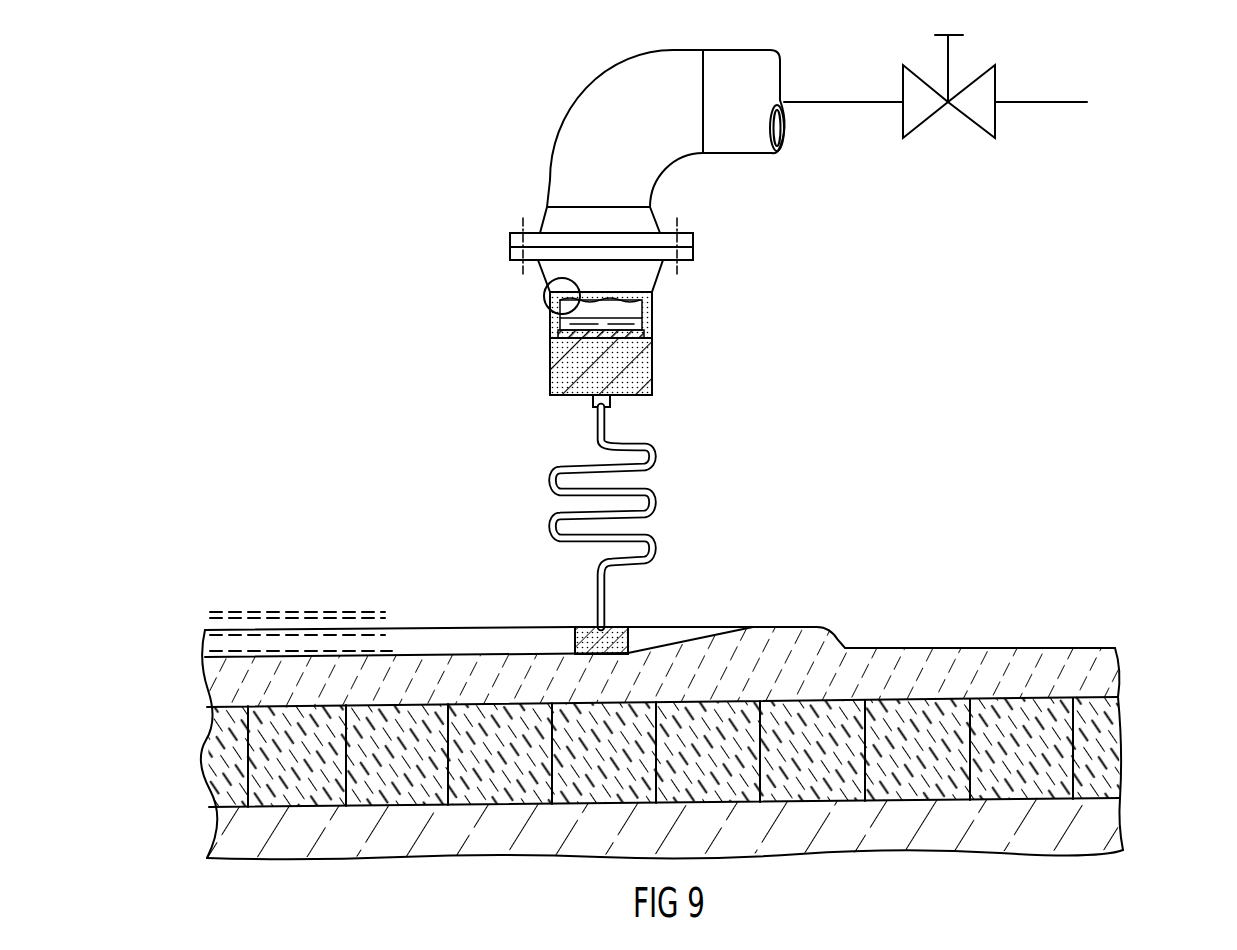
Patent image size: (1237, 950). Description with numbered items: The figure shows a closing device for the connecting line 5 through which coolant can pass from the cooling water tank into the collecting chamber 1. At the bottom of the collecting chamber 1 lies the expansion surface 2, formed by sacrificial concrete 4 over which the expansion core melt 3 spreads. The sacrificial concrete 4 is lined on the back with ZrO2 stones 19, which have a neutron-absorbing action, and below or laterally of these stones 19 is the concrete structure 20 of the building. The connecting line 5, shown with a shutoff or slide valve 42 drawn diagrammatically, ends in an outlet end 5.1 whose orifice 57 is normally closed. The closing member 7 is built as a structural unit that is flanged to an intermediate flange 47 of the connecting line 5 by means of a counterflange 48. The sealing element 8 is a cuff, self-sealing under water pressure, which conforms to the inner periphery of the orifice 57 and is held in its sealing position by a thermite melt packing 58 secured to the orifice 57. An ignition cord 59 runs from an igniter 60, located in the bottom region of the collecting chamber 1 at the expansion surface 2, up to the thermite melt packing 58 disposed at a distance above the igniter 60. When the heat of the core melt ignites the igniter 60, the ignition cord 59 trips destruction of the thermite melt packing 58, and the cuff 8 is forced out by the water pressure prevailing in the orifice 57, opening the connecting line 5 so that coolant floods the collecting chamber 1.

The collecting chamber 1 is at (408, 496).
The expansion surface 2 is at (493, 652).
The expansion core melt 3 is at (285, 612).
The sacrificial concrete 4 is at (963, 672).
The connecting line 5 is at (757, 155).
The outlet end 5.1 is at (553, 183).
The closing member 7 is at (541, 340).
The sealing element 8 is at (650, 317).
The ZrO2 stones 19 is at (1102, 721).
The concrete structure 20 is at (1100, 822).
The shutoff or slide valve 42 is at (928, 118).
The intermediate flange 47 is at (510, 235).
The counterflange 48 is at (510, 252).
The orifice 57 is at (548, 283).
The thermite melt packing 58 is at (652, 363).
The ignition cord 59 is at (652, 447).
The igniter 60 is at (615, 627).